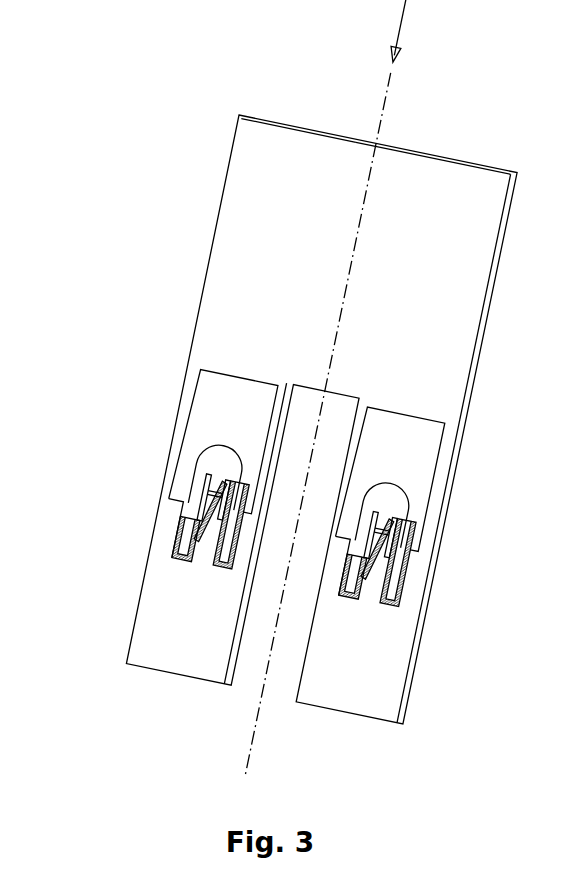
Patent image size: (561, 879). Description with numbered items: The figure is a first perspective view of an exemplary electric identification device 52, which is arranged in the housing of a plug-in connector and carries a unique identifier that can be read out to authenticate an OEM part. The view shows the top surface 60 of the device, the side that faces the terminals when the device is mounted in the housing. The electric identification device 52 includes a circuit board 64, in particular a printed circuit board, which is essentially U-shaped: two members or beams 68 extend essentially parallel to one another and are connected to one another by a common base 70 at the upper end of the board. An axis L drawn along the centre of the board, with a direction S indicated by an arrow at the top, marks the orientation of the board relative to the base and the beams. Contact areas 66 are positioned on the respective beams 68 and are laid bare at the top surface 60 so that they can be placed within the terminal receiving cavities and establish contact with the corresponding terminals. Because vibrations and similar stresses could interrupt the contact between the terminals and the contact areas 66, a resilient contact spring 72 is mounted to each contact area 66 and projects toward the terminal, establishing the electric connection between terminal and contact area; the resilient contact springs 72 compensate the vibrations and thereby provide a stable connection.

The electric identification device 52 is at (130, 85).
The top surface 60 is at (248, 211).
The circuit board 64 is at (272, 145).
The common base 70 is at (380, 143).
The insertion direction S is at (401, 20).
The longitudinal axis L is at (387, 82).
The beams 68 is at (172, 608).
The contact areas 66 is at (222, 400).
The resilient contact springs 72 is at (208, 503).